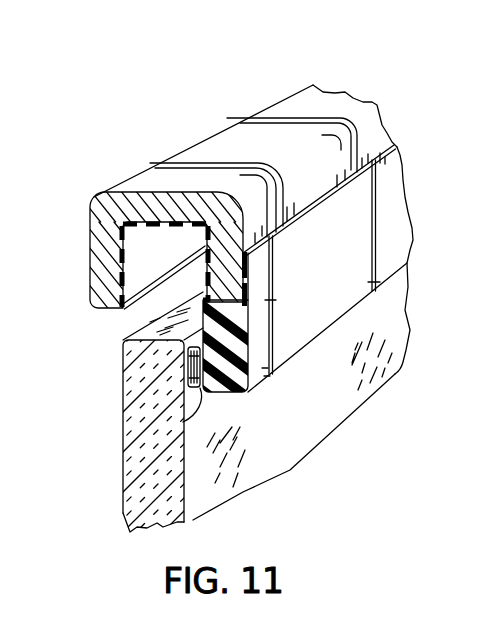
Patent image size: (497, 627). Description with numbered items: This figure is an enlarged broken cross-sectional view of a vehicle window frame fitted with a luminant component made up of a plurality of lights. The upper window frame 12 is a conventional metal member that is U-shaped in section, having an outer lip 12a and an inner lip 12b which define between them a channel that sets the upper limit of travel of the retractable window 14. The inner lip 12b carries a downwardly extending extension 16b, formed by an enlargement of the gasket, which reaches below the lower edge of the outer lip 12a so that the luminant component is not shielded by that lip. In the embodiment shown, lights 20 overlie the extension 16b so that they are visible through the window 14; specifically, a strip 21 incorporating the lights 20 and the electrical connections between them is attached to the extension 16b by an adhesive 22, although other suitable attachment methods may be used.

The upper window frame 12 is at (325, 118).
The outer lip 12a is at (103, 250).
The inner lip 12b is at (233, 279).
The retractable window 14 is at (308, 412).
The extension 16b is at (240, 392).
The lights 20 is at (188, 369).
The strip 21 is at (197, 396).
The adhesive 22 is at (145, 442).